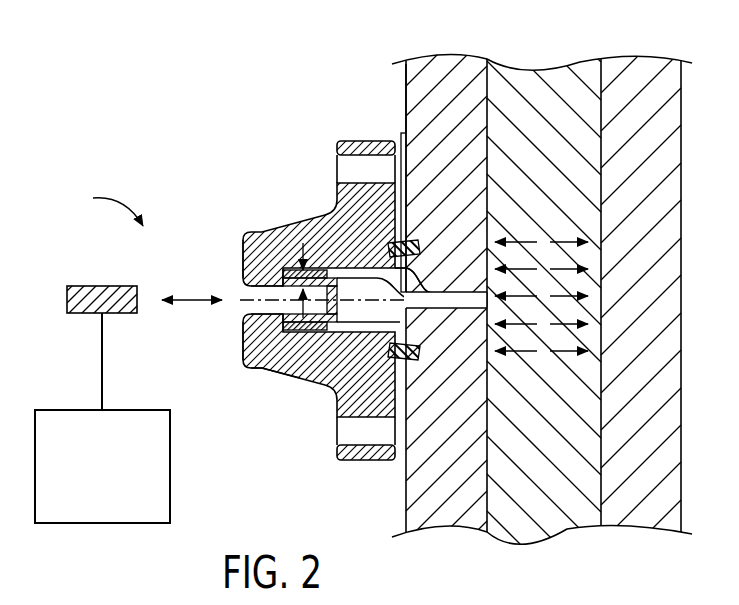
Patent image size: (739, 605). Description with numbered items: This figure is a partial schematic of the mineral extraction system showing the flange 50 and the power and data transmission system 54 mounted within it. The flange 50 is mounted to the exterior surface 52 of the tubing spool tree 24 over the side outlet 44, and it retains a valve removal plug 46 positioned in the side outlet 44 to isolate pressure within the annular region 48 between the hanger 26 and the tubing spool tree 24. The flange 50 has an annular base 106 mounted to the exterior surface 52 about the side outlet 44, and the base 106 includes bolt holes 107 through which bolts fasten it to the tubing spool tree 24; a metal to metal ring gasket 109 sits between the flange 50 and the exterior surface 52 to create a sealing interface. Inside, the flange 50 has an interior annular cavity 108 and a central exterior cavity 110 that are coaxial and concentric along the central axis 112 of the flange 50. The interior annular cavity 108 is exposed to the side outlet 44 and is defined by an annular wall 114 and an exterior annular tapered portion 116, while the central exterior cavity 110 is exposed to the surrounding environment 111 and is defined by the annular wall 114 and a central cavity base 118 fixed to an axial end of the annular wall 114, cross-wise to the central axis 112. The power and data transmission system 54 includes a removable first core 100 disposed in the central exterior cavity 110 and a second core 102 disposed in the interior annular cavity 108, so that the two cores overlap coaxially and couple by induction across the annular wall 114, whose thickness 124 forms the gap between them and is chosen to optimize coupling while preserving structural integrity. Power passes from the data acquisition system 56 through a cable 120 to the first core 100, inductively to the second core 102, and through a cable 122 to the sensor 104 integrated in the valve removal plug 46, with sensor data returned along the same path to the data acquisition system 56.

The tubing spool tree 24 is at (452, 62).
The hanger 26 is at (628, 62).
The side outlet 44 is at (433, 310).
The valve removal plug 46 is at (458, 300).
The annular region 48 is at (545, 92).
The flange 50 is at (318, 212).
The exterior surface 52 is at (405, 78).
The power and data transmission system 54 is at (143, 246).
The data acquisition system 56 is at (100, 523).
The first core 100 is at (103, 286).
The second core 102 is at (288, 323).
The sensor 104 is at (476, 308).
The base 106 is at (367, 148).
The bolt holes 107 is at (362, 453).
The interior annular cavity 108 is at (318, 333).
The gasket 109 is at (401, 133).
The central exterior cavity 110 is at (247, 290).
The environment 111 is at (110, 139).
The central axis 112 is at (241, 250).
The annular wall 114 is at (250, 352).
The exterior annular tapered portion 116 is at (322, 243).
The central cavity base 118 is at (330, 315).
The cable 120 is at (100, 365).
The cable 122 is at (402, 290).
The thickness 124 is at (300, 301).